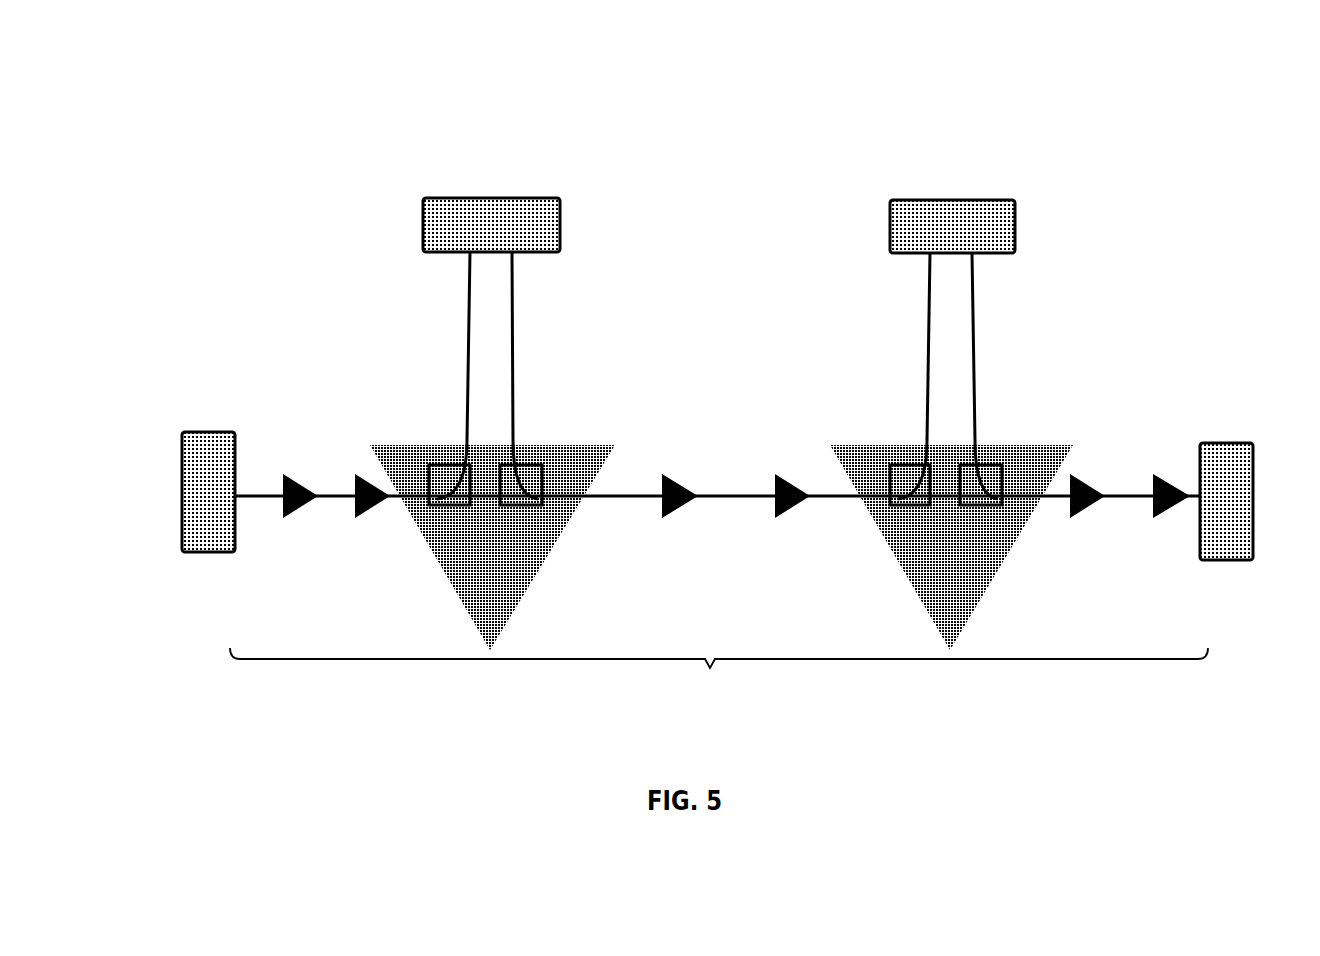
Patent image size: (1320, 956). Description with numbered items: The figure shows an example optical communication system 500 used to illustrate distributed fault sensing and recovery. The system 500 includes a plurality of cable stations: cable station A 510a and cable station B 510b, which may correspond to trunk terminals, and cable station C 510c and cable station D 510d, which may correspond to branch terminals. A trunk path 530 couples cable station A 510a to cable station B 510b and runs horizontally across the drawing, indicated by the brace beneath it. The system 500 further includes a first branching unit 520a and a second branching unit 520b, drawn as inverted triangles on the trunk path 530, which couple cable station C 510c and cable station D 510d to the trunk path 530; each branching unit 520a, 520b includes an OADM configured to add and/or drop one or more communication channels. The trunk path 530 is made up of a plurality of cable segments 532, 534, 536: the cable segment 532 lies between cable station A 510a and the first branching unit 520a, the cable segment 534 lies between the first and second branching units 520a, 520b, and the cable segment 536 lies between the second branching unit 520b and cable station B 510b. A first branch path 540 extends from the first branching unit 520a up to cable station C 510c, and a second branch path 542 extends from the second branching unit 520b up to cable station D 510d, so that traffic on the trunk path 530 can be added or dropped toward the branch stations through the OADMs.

The optical communication system 500 is at (238, 108).
The cable station A 510a is at (182, 465).
The cable station B 510b is at (1250, 458).
The cable station C 510c is at (488, 198).
The cable station D 510d is at (950, 200).
The first branching unit 520a is at (530, 583).
The second branching unit 520b is at (900, 556).
The trunk path 530 is at (719, 677).
The cable segment 532 is at (315, 552).
The cable segment 534 is at (741, 540).
The cable segment 536 is at (1121, 528).
The first branch path 540 is at (444, 352).
The second branch path 542 is at (897, 352).